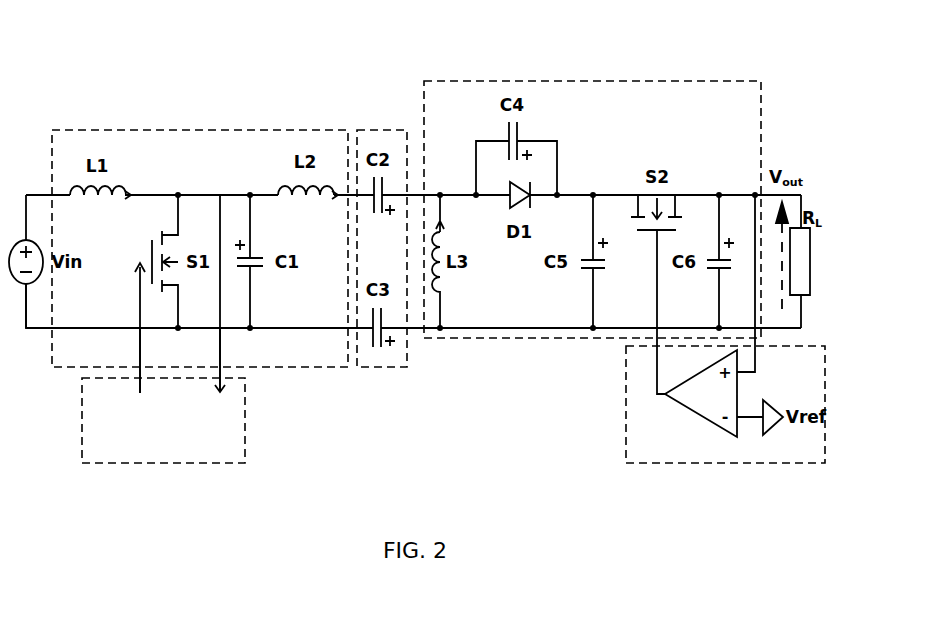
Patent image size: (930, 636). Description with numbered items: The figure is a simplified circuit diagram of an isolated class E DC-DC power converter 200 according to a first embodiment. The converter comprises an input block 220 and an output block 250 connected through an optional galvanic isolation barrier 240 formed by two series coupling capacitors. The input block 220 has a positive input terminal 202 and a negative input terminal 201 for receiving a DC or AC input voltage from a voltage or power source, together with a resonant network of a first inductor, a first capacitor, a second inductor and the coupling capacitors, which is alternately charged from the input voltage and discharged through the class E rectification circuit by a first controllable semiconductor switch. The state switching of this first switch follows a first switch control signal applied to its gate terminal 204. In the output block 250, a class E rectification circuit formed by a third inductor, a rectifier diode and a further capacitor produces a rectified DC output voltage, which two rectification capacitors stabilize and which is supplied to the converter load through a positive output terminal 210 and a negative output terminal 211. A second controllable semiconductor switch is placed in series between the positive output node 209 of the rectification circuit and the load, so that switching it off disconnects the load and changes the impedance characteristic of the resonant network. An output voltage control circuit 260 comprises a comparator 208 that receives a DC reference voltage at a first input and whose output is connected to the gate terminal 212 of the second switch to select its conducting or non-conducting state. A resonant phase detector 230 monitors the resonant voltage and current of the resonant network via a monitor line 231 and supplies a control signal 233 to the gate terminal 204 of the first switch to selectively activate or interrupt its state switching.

The isolated class E DC-DC power converter 200 is at (143, 68).
The negative input terminal 201 is at (30, 203).
The positive input terminal 202 is at (30, 333).
The gate terminal 204 is at (140, 273).
The comparator 208 is at (690, 416).
The positive output node 209 is at (612, 190).
The positive output terminal 210 is at (754, 190).
The negative output terminal 211 is at (715, 322).
The gate terminal 212 is at (652, 262).
The input block 220 is at (195, 128).
The resonant phase detector 230 is at (122, 465).
The monitor line 231 is at (226, 357).
The control signal 233 is at (140, 356).
The galvanic isolation barrier 240 is at (375, 128).
The output block 250 is at (517, 80).
The output voltage control circuit 260 is at (625, 466).